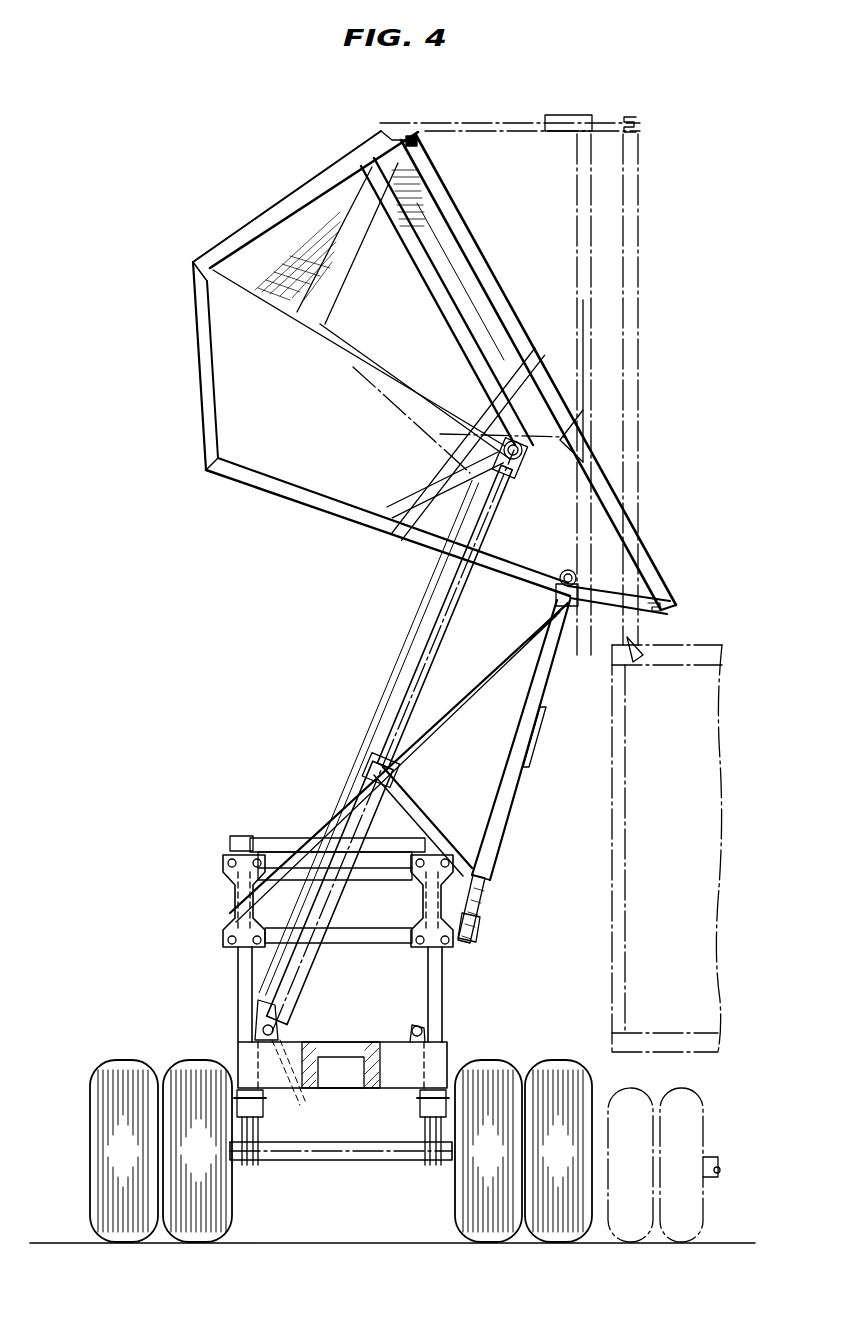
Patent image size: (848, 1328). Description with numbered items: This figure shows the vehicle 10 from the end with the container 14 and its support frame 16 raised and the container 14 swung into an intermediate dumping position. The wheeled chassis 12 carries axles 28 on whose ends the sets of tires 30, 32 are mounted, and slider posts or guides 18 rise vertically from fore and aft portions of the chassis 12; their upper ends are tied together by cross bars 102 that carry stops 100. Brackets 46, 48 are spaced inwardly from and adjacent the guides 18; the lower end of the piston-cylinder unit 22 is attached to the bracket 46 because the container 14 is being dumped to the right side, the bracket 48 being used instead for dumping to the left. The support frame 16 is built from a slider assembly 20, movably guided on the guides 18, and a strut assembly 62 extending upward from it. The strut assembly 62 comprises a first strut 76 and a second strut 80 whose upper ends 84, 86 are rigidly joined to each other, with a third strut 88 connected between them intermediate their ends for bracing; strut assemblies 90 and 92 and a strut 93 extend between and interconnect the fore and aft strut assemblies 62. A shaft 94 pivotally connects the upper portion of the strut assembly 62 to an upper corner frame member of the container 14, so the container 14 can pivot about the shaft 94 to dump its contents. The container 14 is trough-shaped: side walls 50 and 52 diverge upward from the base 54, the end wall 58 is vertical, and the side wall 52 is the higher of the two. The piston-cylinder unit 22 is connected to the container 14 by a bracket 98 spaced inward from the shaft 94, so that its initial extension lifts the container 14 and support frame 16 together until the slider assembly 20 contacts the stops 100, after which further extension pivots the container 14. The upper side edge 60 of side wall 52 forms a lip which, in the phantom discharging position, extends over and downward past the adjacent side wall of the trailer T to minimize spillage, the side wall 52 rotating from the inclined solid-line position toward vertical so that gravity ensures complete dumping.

The vehicle 10 is at (114, 458).
The wheeled chassis 12 is at (456, 1052).
The container 14 is at (650, 421).
The support frame 16 is at (499, 638).
The slider posts or guides 18 is at (240, 990).
The slider assembly 20 is at (226, 914).
The piston-cylinder unit 22 is at (332, 893).
The axles 28 is at (355, 1161).
The tires 30 is at (172, 1062).
The tires 32 is at (520, 1068).
The brackets 46 is at (274, 1028).
The brackets 48 is at (412, 1028).
The side wall 50 is at (307, 204).
The side wall 52 is at (370, 527).
The base 54 is at (205, 355).
The end wall 58 is at (351, 439).
The upper side edge 60 is at (668, 612).
The strut assembly 62 is at (552, 713).
The first strut 76 is at (332, 813).
The second strut 80 is at (465, 901).
The arm upper end 84 is at (548, 612).
The upper end 86 is at (550, 635).
The third strut 88 is at (428, 823).
The strut assembly 90 is at (553, 685).
The strut assembly 92 is at (508, 833).
The strut 93 is at (480, 932).
The shaft 94 is at (576, 566).
The brackets 98 is at (496, 396).
The stops 100 is at (275, 851).
The cross bars 102 is at (240, 836).
The trailer T is at (705, 648).